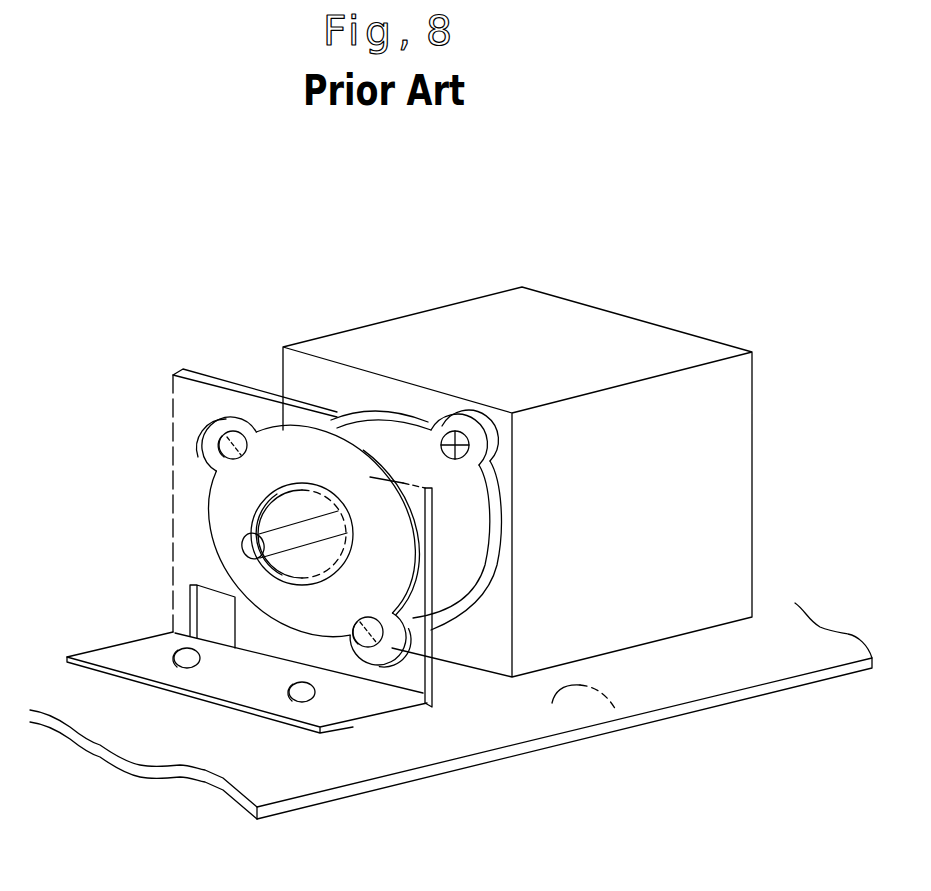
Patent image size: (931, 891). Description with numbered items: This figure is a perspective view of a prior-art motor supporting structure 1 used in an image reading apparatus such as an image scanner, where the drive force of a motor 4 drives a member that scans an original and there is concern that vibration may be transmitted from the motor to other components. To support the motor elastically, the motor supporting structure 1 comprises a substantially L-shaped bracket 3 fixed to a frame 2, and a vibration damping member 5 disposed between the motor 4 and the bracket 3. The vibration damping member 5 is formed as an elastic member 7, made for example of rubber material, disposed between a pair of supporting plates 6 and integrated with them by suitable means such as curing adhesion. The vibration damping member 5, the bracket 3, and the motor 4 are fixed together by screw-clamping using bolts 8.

The motor supporting structure 1 is at (160, 522).
The frame 2 is at (606, 692).
The bracket 3 is at (413, 675).
The motor 4 is at (547, 313).
The vibration damping member 5 is at (349, 399).
The supporting plates 6 is at (258, 447).
The elastic member 7 is at (385, 443).
The bolts 8 is at (205, 447).